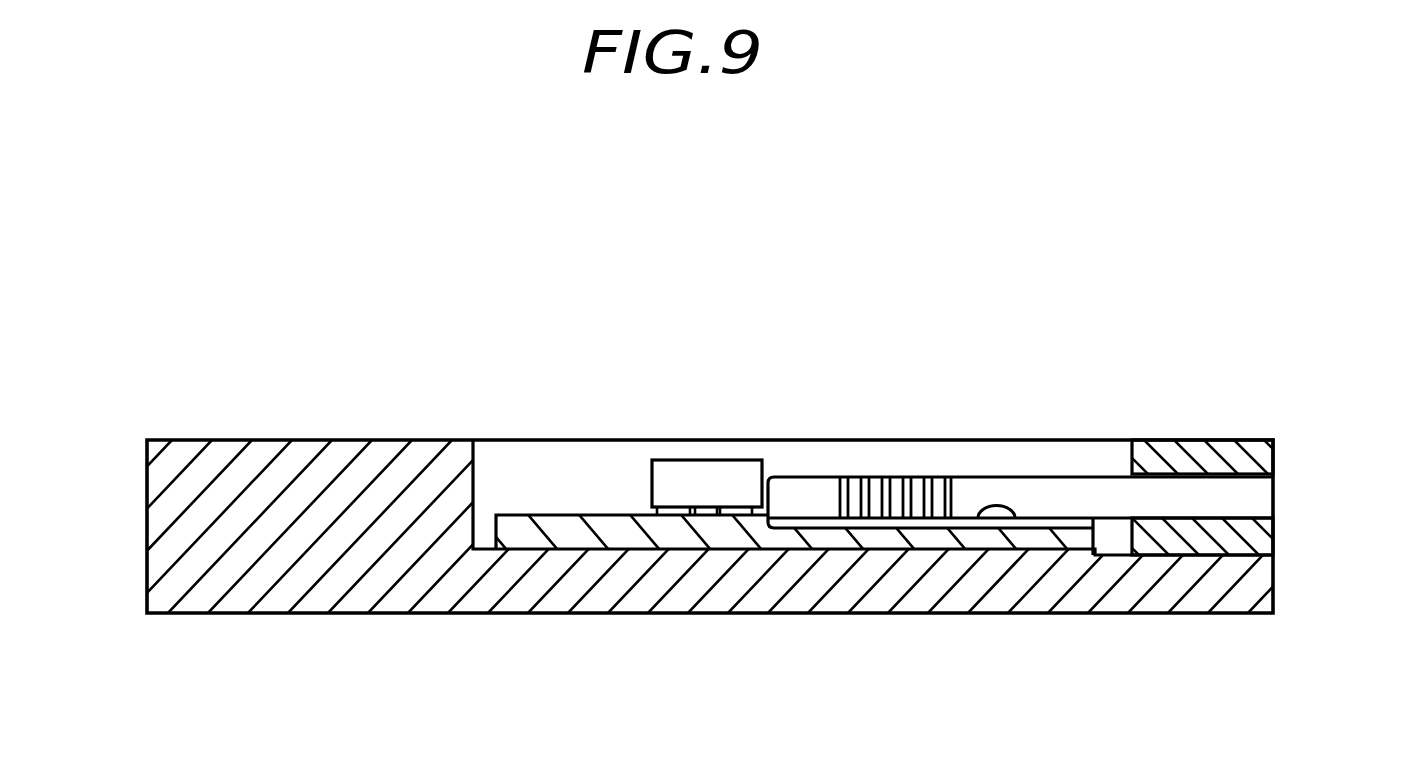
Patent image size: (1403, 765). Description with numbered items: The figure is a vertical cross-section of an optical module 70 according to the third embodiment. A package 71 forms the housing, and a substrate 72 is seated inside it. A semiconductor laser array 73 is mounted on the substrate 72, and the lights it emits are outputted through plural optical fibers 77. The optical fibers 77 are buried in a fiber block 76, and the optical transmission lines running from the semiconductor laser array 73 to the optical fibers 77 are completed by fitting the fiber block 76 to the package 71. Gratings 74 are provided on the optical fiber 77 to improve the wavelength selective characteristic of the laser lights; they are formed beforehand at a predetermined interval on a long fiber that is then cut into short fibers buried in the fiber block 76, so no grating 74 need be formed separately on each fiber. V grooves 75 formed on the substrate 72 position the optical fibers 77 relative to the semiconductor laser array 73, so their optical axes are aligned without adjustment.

The optical module 70 is at (406, 378).
The package 71 is at (337, 614).
The substrate 72 is at (676, 538).
The semiconductor laser array 73 is at (673, 472).
The grating 74 is at (828, 467).
The V groove 75 is at (1015, 518).
The fiber block 76 is at (1182, 453).
The optical fiber 77 is at (1027, 480).